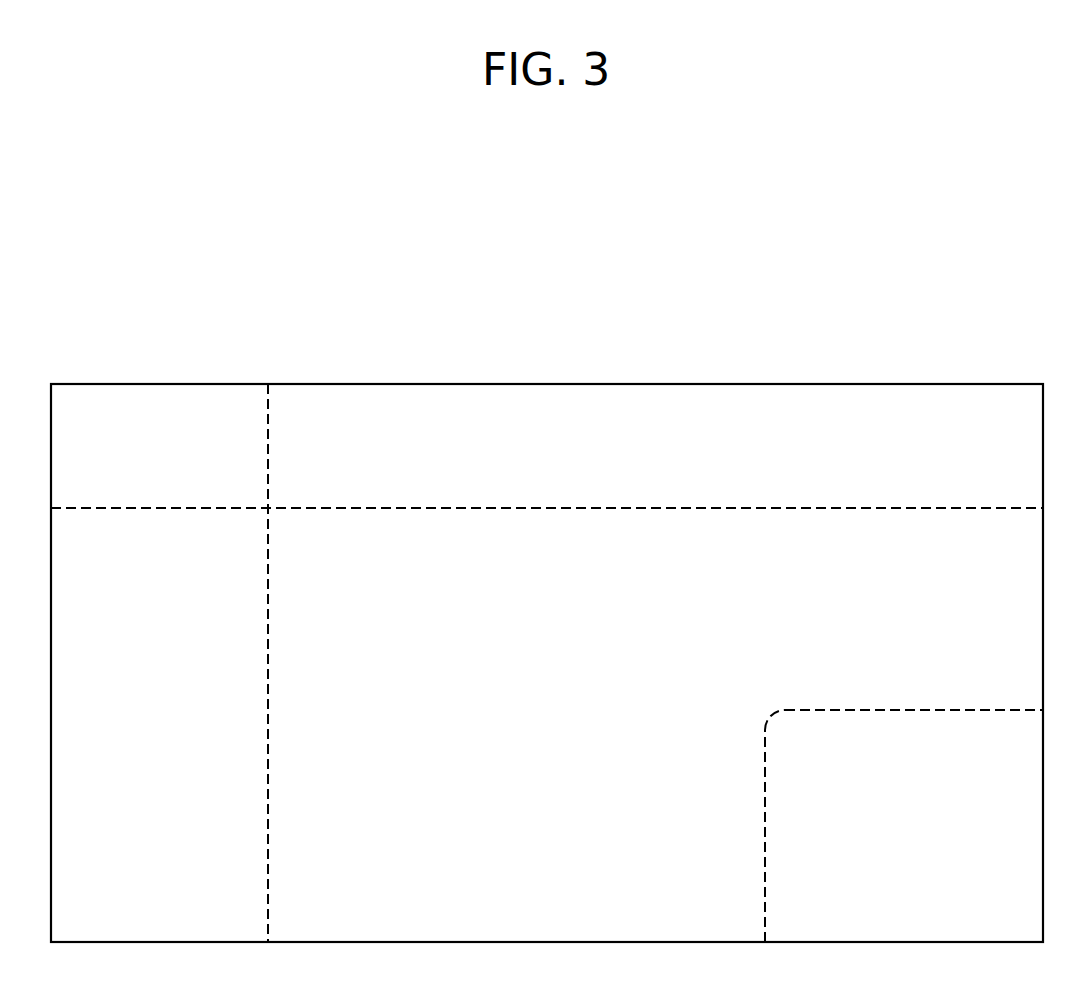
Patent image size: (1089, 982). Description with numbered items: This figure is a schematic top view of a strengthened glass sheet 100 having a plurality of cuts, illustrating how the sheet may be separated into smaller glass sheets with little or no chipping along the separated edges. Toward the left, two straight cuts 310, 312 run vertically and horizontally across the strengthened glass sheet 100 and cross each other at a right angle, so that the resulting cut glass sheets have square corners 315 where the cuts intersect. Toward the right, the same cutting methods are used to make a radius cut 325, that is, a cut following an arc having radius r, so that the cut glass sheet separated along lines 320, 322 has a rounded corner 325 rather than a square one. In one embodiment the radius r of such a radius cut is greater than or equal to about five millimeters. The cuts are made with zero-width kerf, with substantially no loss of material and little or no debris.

The strengthened glass sheet 100 is at (564, 285).
The straight cut 310 is at (234, 663).
The straight cut 312 is at (547, 487).
The square corner 315 is at (285, 525).
The cut line 320 is at (715, 836).
The cut line 322 is at (914, 689).
The radius cut 325 is at (764, 716).
The radius r is at (837, 757).